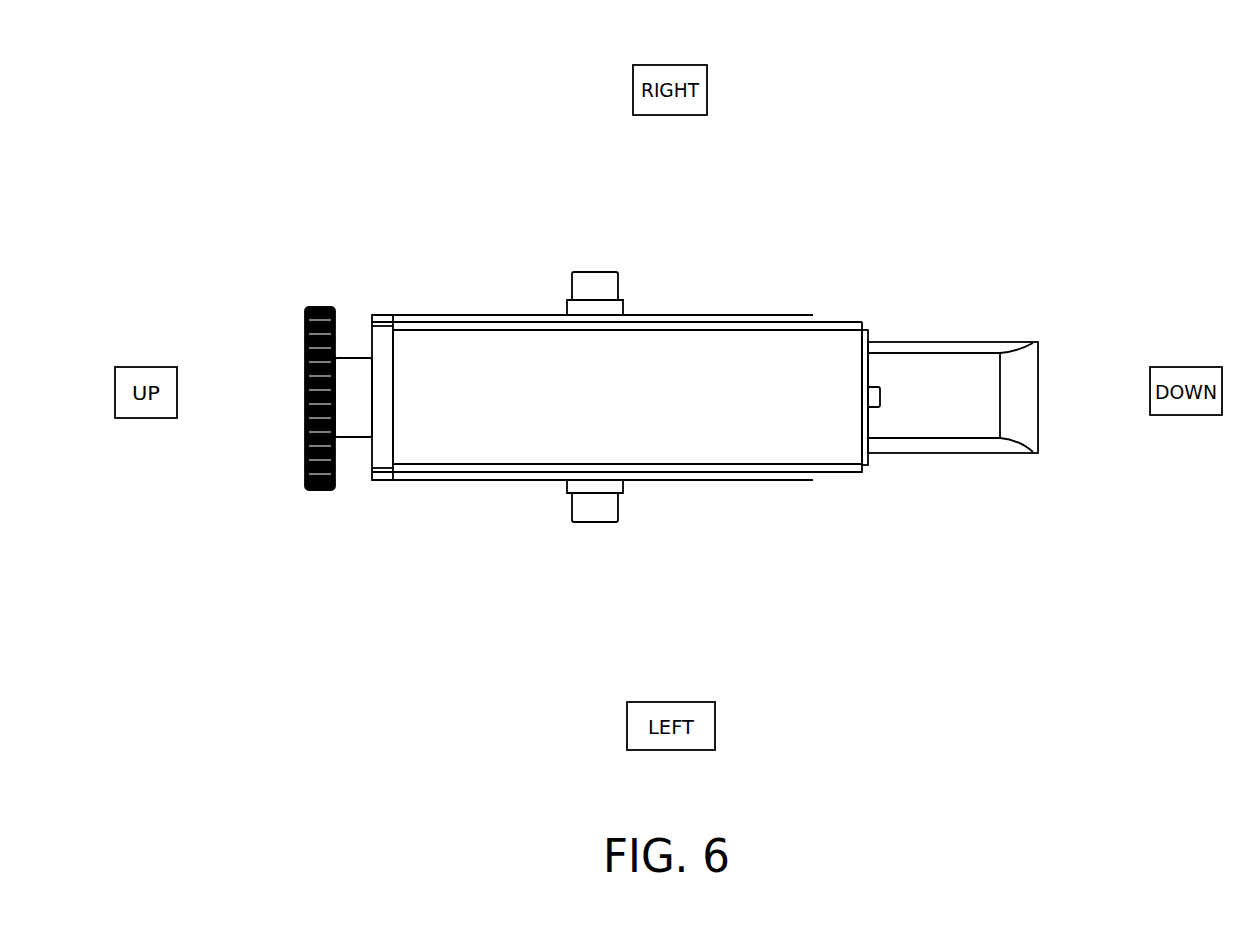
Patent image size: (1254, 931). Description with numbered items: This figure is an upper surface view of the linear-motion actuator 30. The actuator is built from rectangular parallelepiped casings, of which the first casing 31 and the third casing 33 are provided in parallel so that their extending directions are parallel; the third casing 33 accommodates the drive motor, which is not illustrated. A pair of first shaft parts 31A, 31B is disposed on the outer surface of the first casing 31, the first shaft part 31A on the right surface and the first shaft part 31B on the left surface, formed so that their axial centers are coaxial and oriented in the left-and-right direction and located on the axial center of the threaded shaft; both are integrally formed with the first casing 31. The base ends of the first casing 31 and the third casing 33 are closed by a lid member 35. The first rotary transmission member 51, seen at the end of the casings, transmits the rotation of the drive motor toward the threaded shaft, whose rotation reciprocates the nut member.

The linear-motion actuator 30 is at (664, 40).
The first casing 31 is at (447, 315).
The first shaft part 31A is at (598, 278).
The first shaft part 31B is at (590, 528).
The third casing 33 is at (511, 340).
The lid member 35 is at (384, 342).
The first rotary transmission member 51 is at (320, 307).